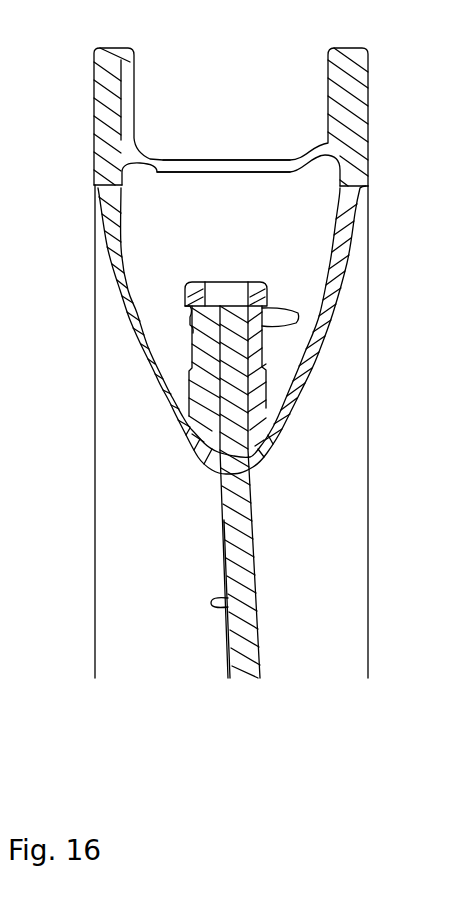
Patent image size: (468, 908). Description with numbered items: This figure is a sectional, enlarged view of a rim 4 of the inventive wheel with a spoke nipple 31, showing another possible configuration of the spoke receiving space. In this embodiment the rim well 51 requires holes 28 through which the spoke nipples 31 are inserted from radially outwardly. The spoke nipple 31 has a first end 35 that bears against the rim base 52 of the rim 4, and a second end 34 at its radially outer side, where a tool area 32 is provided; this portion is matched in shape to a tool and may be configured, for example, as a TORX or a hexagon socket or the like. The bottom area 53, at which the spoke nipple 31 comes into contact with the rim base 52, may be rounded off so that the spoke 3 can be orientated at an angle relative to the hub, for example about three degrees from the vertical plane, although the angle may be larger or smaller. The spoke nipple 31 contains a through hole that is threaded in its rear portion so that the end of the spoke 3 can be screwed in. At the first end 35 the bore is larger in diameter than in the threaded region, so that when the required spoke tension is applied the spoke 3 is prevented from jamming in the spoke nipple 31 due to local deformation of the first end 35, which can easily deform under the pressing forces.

The rim 4 is at (378, 118).
The rim well 51 is at (150, 150).
The hole 28 is at (194, 170).
The tool area 32 is at (232, 292).
The second end 34 is at (168, 288).
The first end 35 is at (190, 427).
The spoke nipple 31 is at (257, 378).
The bottom area 53 is at (265, 450).
The rim base 52 is at (266, 470).
The spoke 3 is at (250, 603).